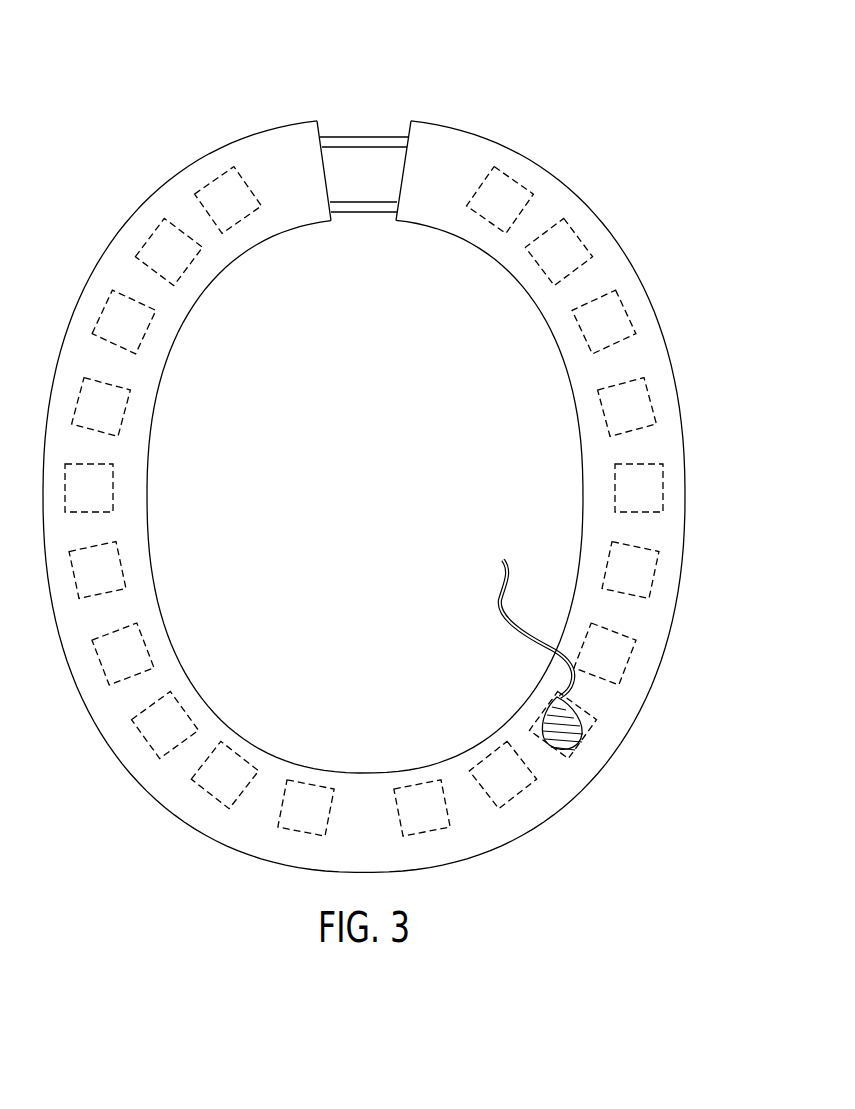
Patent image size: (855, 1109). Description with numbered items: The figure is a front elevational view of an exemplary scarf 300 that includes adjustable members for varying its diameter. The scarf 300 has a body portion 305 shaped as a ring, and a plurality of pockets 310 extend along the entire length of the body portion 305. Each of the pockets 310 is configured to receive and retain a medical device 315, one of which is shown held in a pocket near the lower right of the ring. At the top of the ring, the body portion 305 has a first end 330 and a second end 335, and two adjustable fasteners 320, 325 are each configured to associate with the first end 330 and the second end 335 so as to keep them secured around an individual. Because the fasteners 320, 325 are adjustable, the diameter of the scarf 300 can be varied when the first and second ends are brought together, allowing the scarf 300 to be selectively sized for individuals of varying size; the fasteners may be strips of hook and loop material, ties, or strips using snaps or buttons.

The scarf 300 is at (680, 68).
The body portion 305 is at (553, 200).
The pockets 310 is at (670, 488).
The medical device 315 is at (590, 750).
The adjustable fastener 320 is at (334, 160).
The adjustable fastener 325 is at (391, 182).
The first end 330 is at (351, 158).
The second end 335 is at (372, 232).